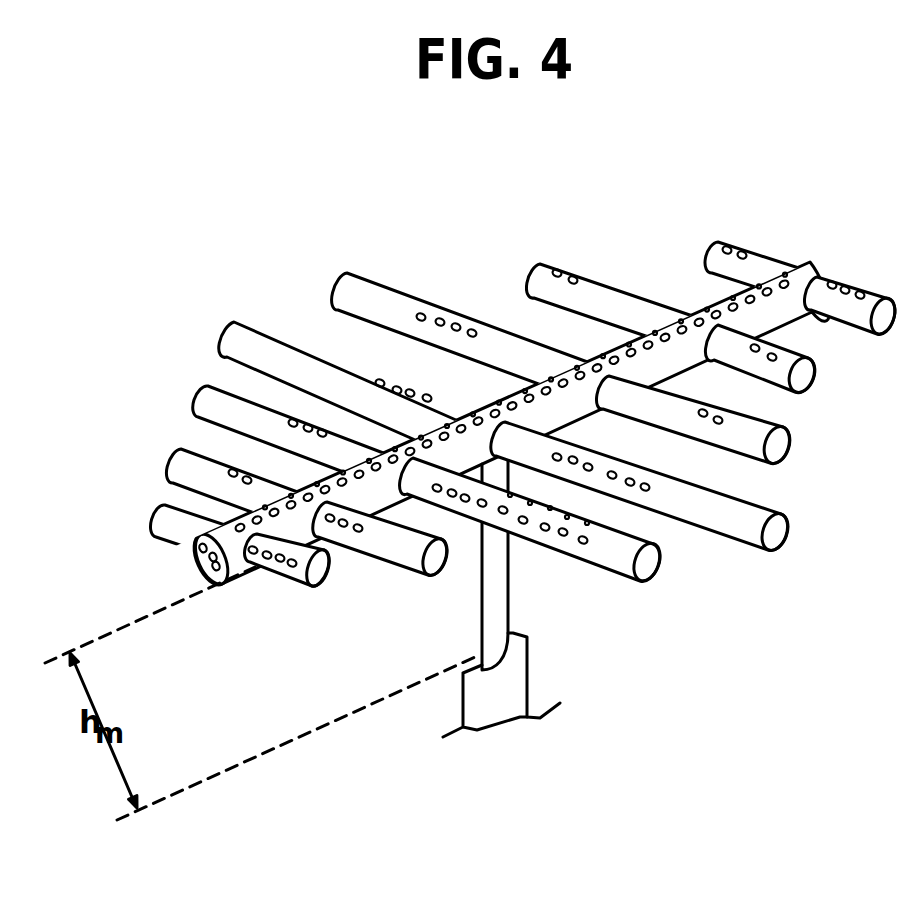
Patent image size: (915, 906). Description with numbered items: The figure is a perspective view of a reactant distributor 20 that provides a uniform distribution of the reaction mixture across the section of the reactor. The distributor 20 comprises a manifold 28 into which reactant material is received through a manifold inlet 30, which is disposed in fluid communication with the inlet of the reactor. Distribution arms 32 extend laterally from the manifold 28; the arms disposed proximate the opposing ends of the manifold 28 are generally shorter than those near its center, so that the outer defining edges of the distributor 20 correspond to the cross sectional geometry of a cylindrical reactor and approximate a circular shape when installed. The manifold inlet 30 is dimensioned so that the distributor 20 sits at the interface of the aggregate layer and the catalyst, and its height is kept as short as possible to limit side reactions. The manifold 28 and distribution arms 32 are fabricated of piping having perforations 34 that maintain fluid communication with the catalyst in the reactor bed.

The distributor 20 is at (207, 272).
The manifold 28 is at (740, 290).
The manifold inlet 30 is at (509, 607).
The distribution arms 32 is at (886, 340).
The perforations 34 is at (557, 270).